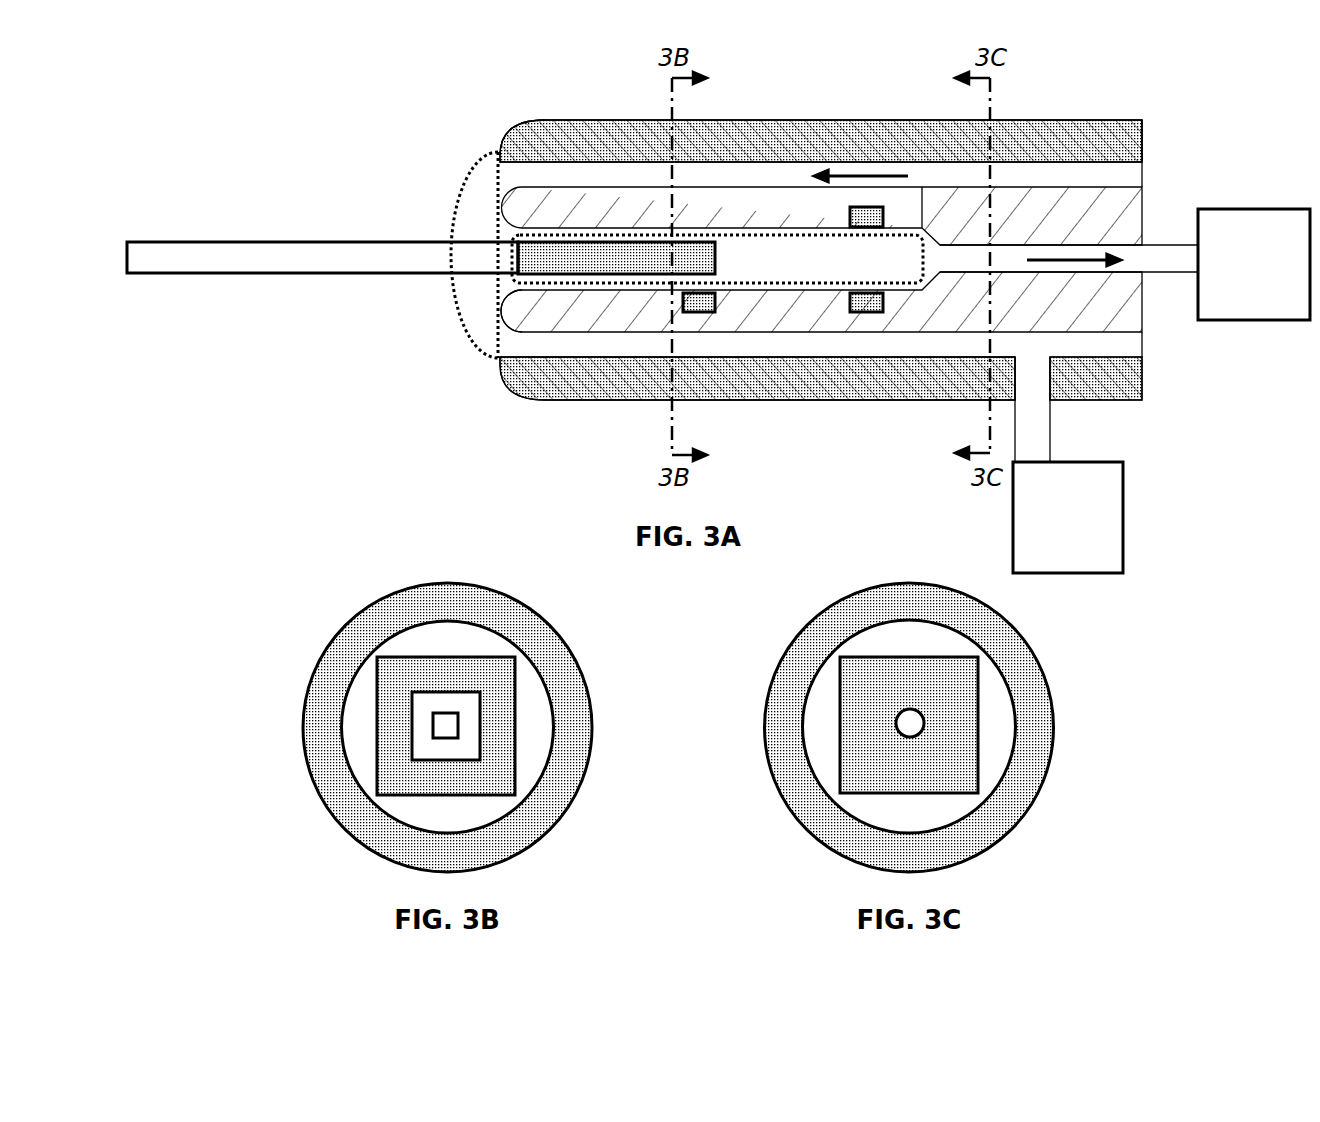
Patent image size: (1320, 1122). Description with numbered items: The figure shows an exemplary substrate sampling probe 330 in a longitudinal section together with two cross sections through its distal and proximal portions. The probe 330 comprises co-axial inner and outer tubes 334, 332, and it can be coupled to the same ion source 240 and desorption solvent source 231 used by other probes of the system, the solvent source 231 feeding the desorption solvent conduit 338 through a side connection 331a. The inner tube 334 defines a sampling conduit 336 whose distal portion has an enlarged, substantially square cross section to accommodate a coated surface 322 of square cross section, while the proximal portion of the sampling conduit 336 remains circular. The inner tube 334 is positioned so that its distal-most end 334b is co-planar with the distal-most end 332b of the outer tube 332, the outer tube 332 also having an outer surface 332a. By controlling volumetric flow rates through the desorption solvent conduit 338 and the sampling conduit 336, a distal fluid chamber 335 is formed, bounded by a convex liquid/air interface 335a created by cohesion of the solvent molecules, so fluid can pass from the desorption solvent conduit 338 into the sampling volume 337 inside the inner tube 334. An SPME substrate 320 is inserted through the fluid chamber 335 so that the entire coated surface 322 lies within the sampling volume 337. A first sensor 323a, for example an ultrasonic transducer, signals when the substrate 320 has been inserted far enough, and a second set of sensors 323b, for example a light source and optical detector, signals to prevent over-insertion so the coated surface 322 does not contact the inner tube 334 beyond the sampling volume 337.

In FIG. 3A, the SPME substrate 320 is at (248, 312).
In FIG. 3A, the coated surface 322 is at (635, 260).
In FIG. 3B, the coated surface 322 is at (458, 723).
In FIG. 3A, the first sensor 323a is at (703, 313).
In FIG. 3A, the second set of sensors 323b is at (868, 313).
In FIG. 3A, the substrate sampling probe 330 is at (494, 113).
In FIG. 3A, the fluid port tube 331a is at (1050, 420).
In FIG. 3A, the outer tube 332 is at (773, 127).
In FIG. 3B, the outer tube 332 is at (378, 620).
In FIG. 3C, the outer tube 332 is at (1023, 765).
In FIG. 3A, the distal end of outer sheath 332a is at (1142, 146).
In FIG. 3A, the distal-most end of the outer tube 332b is at (499, 148).
In FIG. 3A, the inner tube 334 is at (950, 327).
In FIG. 3B, the inner tube 334 is at (448, 672).
In FIG. 3C, the inner tube 334 is at (957, 724).
In FIG. 3A, the distal-most end of the inner tube 334b is at (530, 333).
In FIG. 3A, the distal fluid chamber 335 is at (479, 196).
In FIG. 3A, the liquid/air interface 335a is at (451, 224).
In FIG. 3A, the sampling conduit 336 is at (937, 265).
In FIG. 3B, the sampling conduit 336 is at (422, 748).
In FIG. 3C, the sampling conduit 336 is at (908, 723).
In FIG. 3A, the sampling volume 337 is at (802, 272).
In FIG. 3A, the desorption solvent conduit 338 is at (1050, 182).
In FIG. 3B, the desorption solvent conduit 338 is at (355, 722).
In FIG. 3C, the desorption solvent conduit 338 is at (828, 772).
In FIG. 3A, the ion source 240 is at (1254, 264).
In FIG. 3A, the desorption solvent source 231 is at (1068, 517).